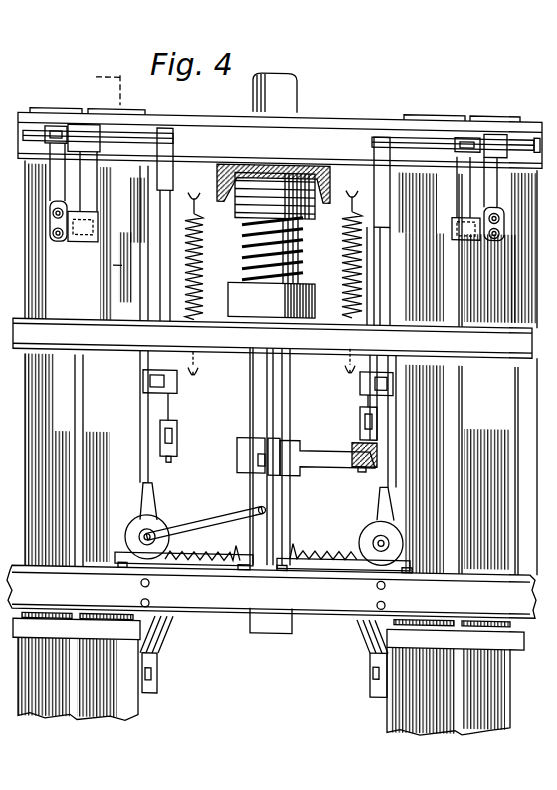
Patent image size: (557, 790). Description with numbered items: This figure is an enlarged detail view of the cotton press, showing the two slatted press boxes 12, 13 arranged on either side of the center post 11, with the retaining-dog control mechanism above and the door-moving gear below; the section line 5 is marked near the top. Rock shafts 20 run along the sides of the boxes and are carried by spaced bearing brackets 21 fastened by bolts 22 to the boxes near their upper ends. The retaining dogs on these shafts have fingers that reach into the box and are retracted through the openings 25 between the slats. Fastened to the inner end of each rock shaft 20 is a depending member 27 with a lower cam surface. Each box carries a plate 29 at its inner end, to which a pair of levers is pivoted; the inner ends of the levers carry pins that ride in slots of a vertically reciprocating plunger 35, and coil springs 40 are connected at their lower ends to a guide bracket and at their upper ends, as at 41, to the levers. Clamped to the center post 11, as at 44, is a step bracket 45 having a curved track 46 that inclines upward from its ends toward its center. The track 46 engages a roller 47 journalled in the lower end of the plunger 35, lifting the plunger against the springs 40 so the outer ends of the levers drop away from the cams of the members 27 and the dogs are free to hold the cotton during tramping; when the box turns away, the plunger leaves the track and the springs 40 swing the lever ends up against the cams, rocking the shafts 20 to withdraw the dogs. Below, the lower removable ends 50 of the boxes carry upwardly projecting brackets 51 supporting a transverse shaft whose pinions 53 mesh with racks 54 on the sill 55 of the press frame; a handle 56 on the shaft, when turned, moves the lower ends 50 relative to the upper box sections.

The section line 5 is at (100, 172).
The center post 11 is at (292, 91).
The press box 12 is at (510, 437).
The press box 13 is at (27, 405).
The rock shaft 20 is at (415, 130).
The bearing bracket 21 is at (43, 187).
The bolt 22 is at (62, 240).
The opening 25 is at (80, 407).
The depending member 27 is at (175, 150).
The plate 29 is at (152, 190).
The plunger 35 is at (380, 306).
The coil spring 40 is at (200, 247).
The spring connection 41 is at (200, 207).
The clamp 44 is at (250, 452).
The step bracket 45 is at (317, 437).
The curved track 46 is at (380, 440).
The roller 47 is at (178, 428).
The lower removable end 50 is at (140, 702).
The bracket 51 is at (155, 653).
The pinion 53 is at (136, 520).
The rack 54 is at (215, 562).
The sill 55 is at (338, 608).
The handle 56 is at (213, 516).